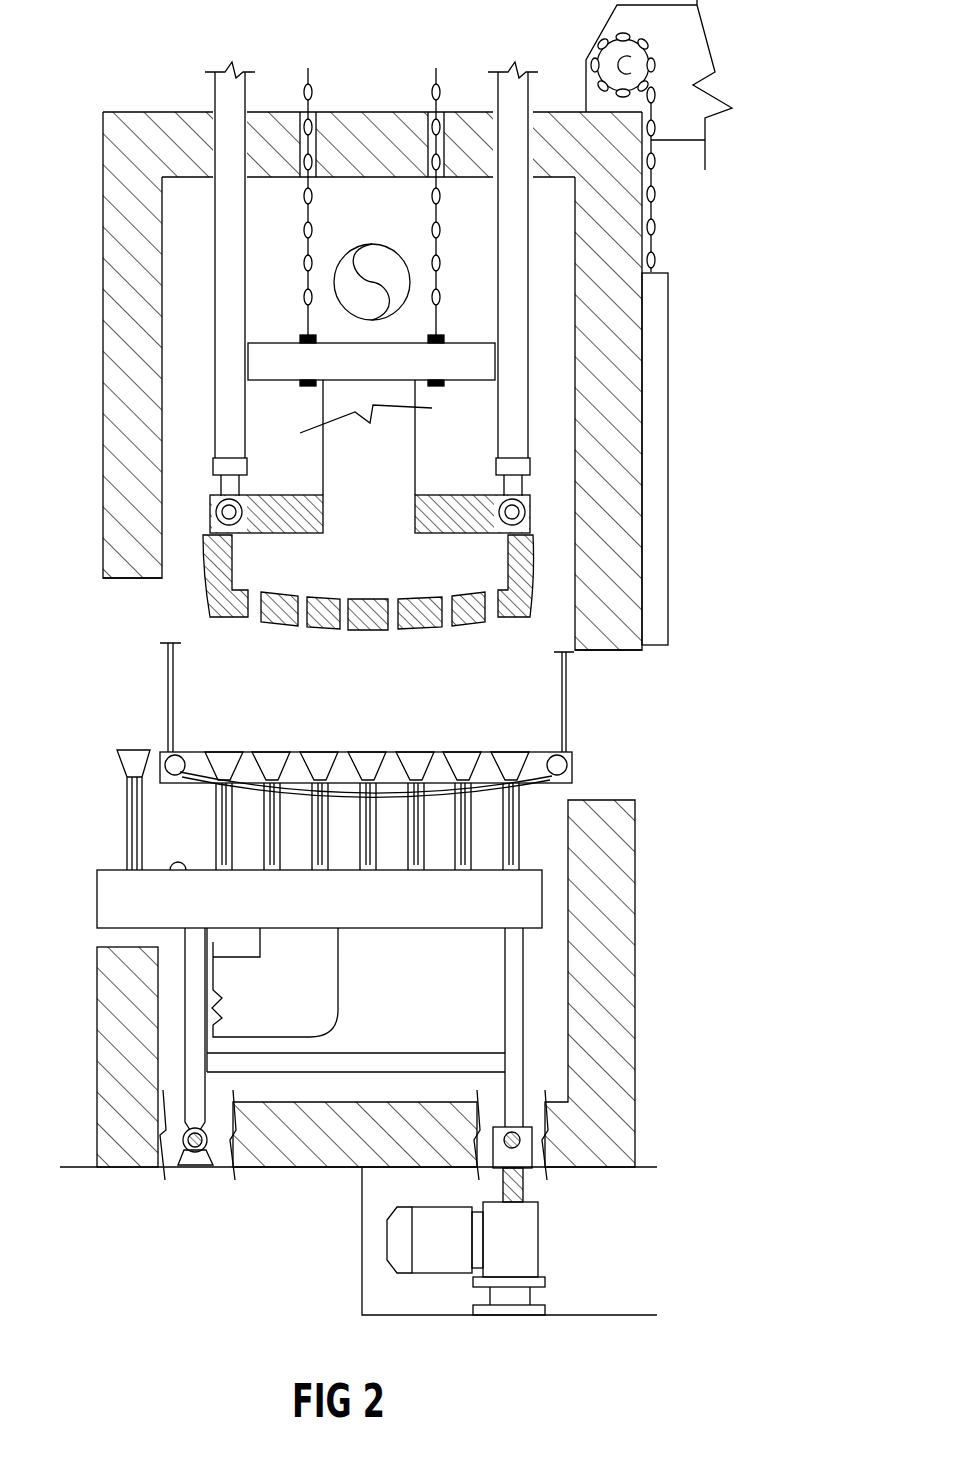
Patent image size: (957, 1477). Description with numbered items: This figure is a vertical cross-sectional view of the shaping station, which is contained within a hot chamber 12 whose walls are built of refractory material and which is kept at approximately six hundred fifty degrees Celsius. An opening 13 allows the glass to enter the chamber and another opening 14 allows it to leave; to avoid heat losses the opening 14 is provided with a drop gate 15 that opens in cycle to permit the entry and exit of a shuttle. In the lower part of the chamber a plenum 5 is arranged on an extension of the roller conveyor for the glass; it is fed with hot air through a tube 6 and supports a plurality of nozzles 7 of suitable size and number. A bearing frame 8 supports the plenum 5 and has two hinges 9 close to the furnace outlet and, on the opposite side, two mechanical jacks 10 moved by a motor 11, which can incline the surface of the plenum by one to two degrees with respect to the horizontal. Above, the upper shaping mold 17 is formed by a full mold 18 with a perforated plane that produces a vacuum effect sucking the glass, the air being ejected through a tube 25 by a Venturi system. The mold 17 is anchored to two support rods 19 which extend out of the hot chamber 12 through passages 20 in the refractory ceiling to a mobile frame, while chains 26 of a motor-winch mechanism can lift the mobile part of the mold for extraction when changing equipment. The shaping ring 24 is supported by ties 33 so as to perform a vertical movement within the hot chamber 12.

The plenum 5 is at (470, 915).
The tube 6 is at (310, 985).
The nozzles 7 is at (128, 840).
The bearing frame 8 is at (515, 1047).
The hinges 9 is at (195, 1152).
The mechanical jacks 10 is at (540, 1175).
The motor 11 is at (400, 1248).
The hot chamber 12 is at (120, 335).
The opening 13 is at (140, 585).
The opening 14 is at (620, 643).
The drop gate 15 is at (655, 558).
The upper shaping mold 17 is at (455, 510).
The full mold 18 is at (375, 622).
The support rods 19 is at (535, 318).
The passages 20 is at (213, 122).
The shaping ring 24 is at (525, 786).
The tube 25 is at (372, 258).
The chains 26 is at (440, 228).
The ties 33 is at (172, 715).